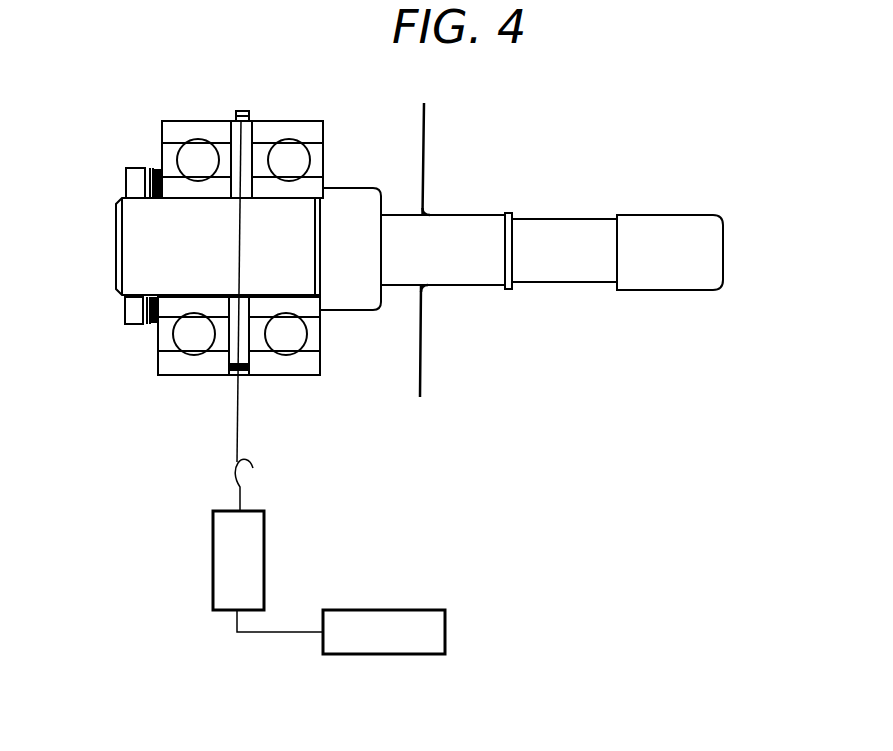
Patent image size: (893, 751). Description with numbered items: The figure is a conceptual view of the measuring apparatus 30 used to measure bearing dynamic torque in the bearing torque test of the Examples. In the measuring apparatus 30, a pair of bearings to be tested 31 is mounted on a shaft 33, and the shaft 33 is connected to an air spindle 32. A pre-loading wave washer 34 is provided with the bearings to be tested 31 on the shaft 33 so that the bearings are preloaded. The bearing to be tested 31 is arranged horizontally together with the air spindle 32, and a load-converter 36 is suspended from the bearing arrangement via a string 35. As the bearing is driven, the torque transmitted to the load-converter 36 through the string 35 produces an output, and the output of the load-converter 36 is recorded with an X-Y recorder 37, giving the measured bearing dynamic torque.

The measuring apparatus 30 is at (410, 180).
The bearing to be tested 31 is at (187, 365).
The air spindle 32 is at (438, 354).
The shaft 33 is at (132, 275).
The pre-loading wave washer 34 is at (147, 323).
The string 35 is at (263, 363).
The load-converter 36 is at (248, 562).
The X-Y recorder 37 is at (388, 625).